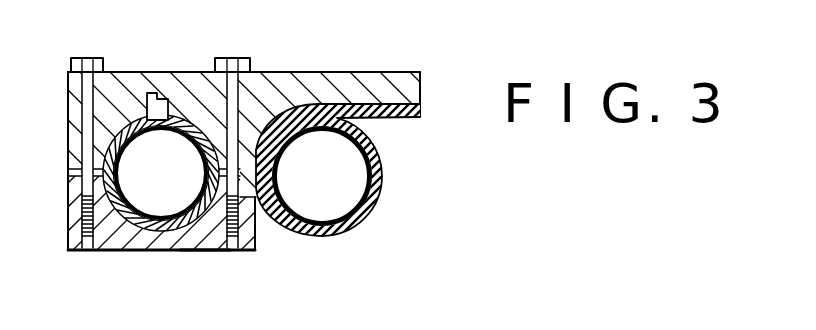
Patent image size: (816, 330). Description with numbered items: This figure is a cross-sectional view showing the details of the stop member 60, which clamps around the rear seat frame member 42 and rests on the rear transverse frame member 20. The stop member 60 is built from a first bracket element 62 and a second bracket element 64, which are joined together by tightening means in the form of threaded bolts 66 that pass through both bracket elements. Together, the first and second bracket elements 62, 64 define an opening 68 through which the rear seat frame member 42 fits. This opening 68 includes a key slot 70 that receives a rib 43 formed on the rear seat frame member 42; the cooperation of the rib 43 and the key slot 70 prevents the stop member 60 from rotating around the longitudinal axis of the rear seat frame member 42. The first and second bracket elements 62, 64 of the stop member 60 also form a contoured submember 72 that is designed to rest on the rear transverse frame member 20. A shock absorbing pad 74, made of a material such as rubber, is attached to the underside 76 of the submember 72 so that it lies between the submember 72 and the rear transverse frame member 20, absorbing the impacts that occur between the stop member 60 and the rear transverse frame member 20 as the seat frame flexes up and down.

The rear transverse frame member 20 is at (378, 192).
The rear seat frame member 42 is at (150, 218).
The rib 43 is at (157, 131).
The stop member 60 is at (53, 242).
The first bracket element 62 is at (108, 252).
The second bracket element 64 is at (197, 72).
The threaded bolts 66 is at (88, 58).
The opening 68 is at (207, 252).
The key slot 70 is at (148, 72).
The contoured submember 72 is at (393, 72).
The shock absorbing pad 74 is at (400, 118).
The underside 76 is at (256, 218).